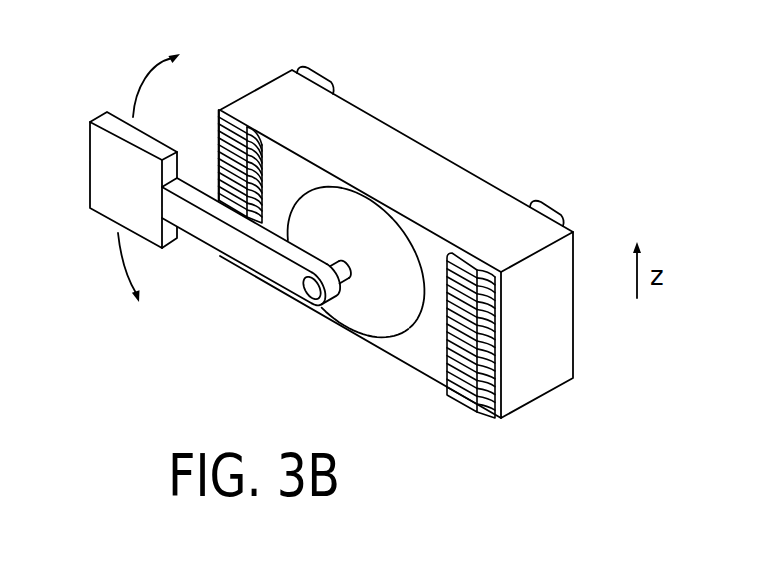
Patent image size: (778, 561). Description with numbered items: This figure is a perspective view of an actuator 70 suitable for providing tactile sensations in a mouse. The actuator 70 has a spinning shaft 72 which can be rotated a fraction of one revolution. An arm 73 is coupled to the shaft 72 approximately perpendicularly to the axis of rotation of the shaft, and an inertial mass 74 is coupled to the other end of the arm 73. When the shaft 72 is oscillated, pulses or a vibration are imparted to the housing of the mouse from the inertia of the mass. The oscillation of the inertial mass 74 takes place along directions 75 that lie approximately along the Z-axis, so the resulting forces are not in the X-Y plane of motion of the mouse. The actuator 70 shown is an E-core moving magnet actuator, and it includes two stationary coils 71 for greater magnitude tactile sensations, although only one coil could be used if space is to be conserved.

The actuator 70 is at (584, 80).
The stationary coils 71 is at (234, 147).
The spinning shaft 72 is at (345, 274).
The arm 73 is at (200, 228).
The inertial mass 74 is at (102, 179).
The directions 75 is at (140, 78).